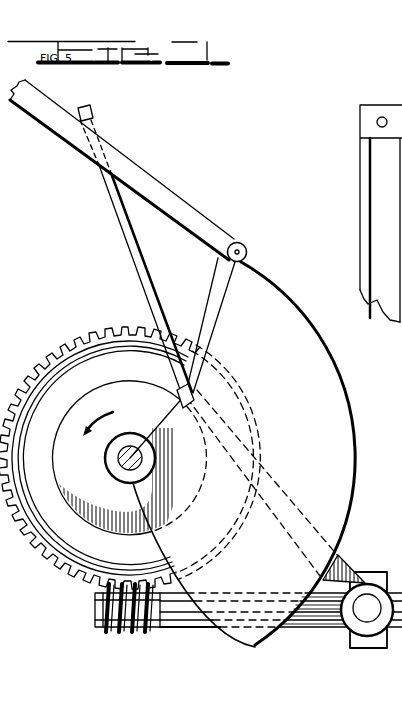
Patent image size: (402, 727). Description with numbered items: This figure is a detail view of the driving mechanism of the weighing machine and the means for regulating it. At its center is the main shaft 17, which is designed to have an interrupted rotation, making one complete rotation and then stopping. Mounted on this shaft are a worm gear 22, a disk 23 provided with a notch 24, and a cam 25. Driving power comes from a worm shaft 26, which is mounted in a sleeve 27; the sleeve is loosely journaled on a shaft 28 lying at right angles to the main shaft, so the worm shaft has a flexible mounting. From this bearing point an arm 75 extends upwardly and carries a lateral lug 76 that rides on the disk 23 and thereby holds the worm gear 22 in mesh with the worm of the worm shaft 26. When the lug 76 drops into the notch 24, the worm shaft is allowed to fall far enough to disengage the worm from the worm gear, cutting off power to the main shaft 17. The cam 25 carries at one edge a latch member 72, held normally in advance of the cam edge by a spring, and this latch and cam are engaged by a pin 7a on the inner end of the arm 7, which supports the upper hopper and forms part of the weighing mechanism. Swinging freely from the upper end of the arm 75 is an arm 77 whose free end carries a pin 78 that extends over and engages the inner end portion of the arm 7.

The arm 7 is at (152, 180).
The pin 7a is at (245, 246).
The main shaft 17 is at (146, 460).
The worm gear 22 is at (100, 330).
The disk 23 is at (129, 460).
The notch 24 is at (168, 395).
The cam 25 is at (244, 454).
The worm shaft 26 is at (114, 632).
The sleeve 27 is at (318, 627).
The shaft 28 is at (358, 632).
The latch member 72 is at (214, 291).
The arm 75 is at (345, 560).
The lug 76 is at (190, 392).
The arm 77 is at (118, 222).
The pin 78 is at (93, 110).